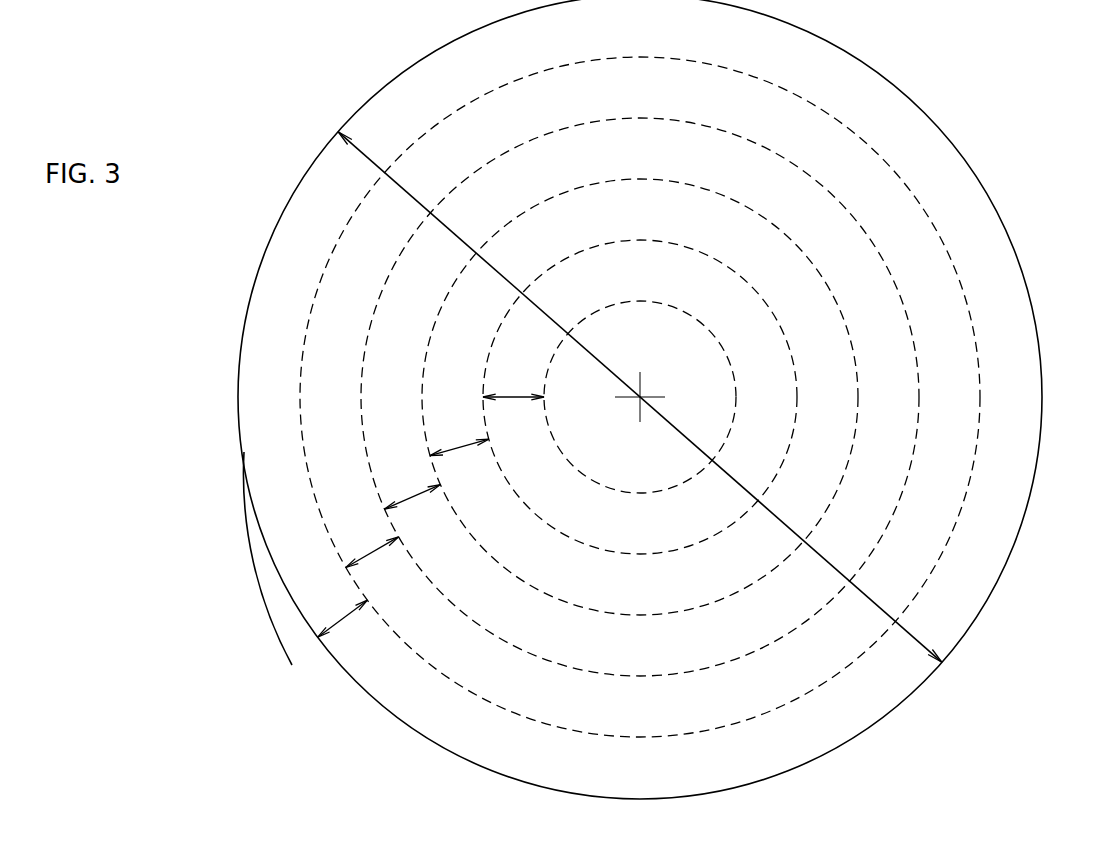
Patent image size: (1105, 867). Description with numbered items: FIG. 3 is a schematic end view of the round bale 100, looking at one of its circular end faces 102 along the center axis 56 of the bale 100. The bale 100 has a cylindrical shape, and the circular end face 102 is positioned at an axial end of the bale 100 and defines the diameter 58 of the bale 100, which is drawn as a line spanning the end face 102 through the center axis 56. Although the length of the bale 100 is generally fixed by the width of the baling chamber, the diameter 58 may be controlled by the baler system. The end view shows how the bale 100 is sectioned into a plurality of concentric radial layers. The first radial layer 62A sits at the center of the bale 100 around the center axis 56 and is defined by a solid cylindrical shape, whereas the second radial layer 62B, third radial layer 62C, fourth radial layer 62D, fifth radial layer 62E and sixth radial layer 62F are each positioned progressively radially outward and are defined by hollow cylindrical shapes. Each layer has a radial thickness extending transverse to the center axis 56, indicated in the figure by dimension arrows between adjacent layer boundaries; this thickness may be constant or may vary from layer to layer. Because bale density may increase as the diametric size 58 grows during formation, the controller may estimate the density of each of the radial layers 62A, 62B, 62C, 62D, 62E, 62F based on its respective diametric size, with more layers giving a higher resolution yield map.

The bale 100 is at (943, 78).
The circular end face 102 is at (300, 538).
The center axis 56 is at (643, 397).
The diameter 58 is at (447, 225).
The first radial layer 62A is at (658, 462).
The second radial layer 62B is at (708, 513).
The third radial layer 62C is at (712, 575).
The fourth radial layer 62D is at (706, 640).
The fifth radial layer 62E is at (706, 705).
The sixth radial layer 62F is at (706, 765).